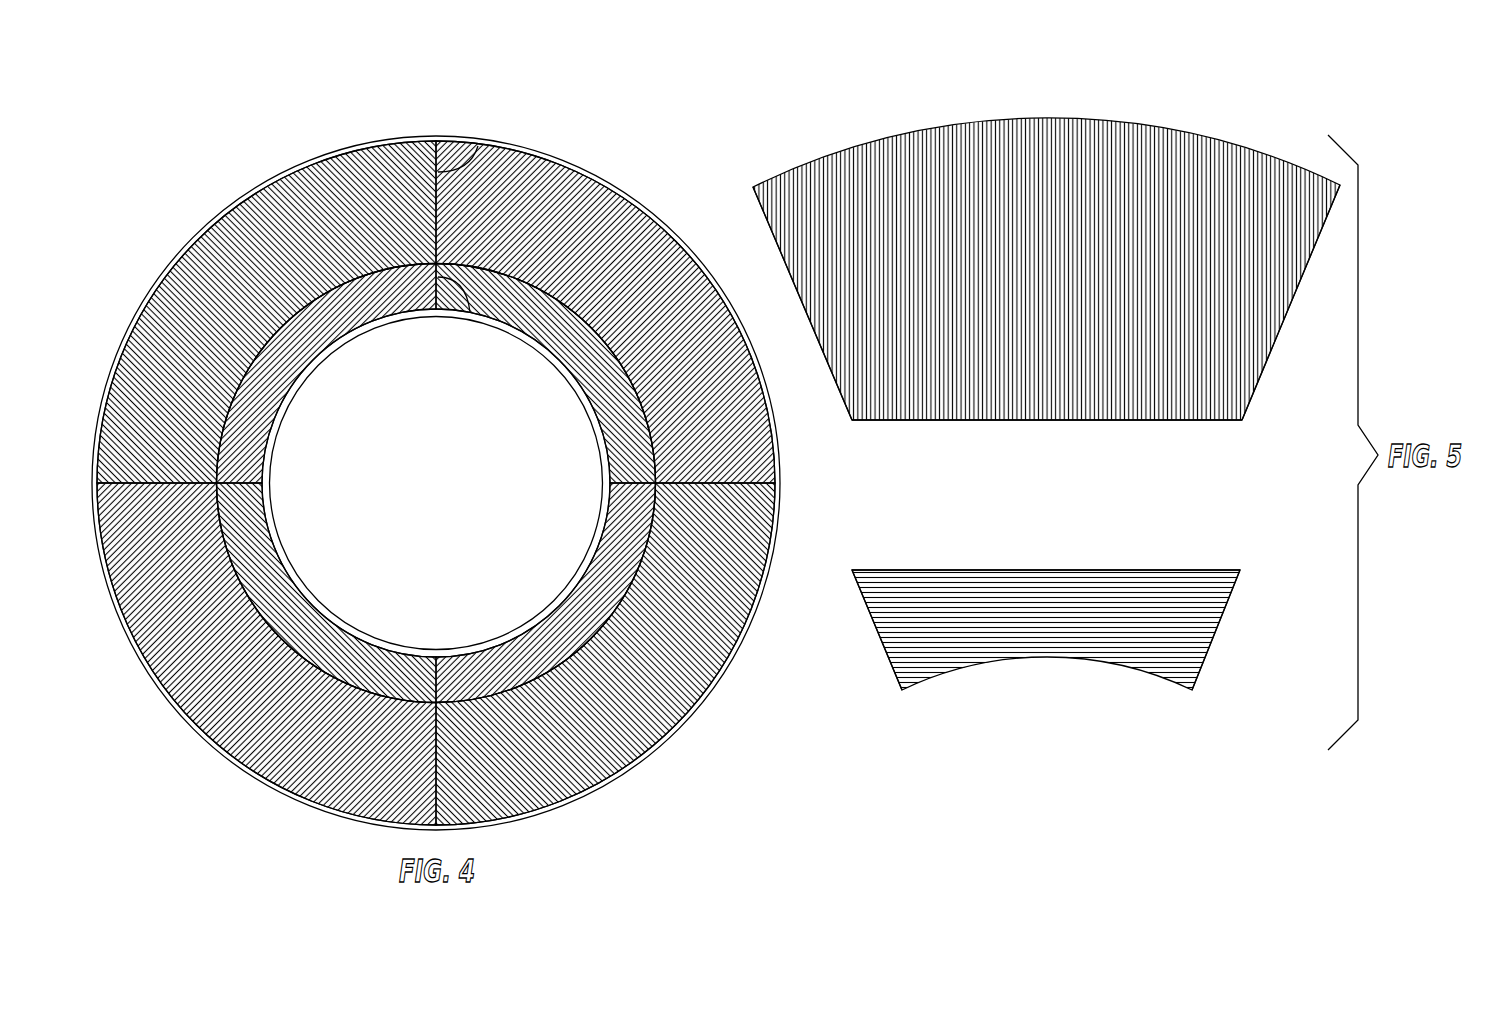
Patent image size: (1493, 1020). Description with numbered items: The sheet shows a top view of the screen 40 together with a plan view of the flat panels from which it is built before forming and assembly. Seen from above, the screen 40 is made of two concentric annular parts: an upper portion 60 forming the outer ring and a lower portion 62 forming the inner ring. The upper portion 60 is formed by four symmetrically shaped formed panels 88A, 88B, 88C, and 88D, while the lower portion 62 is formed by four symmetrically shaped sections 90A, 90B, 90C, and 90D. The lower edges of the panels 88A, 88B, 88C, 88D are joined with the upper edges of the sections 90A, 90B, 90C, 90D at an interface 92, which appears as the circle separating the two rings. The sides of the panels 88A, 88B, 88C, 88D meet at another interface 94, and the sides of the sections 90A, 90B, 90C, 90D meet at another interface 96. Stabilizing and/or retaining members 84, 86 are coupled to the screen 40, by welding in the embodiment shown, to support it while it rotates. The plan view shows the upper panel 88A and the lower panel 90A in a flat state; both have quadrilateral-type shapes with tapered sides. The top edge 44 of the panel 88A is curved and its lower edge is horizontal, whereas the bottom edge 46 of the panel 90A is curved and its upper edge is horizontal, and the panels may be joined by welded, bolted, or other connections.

In FIG. 4, the screen 40 is at (333, 86).
In FIG. 5, the top edge 44 is at (1225, 140).
In FIG. 5, the bottom edge 46 is at (958, 672).
In FIG. 4, the upper portion 60 is at (260, 170).
In FIG. 4, the lower portion 62 is at (324, 355).
In FIG. 4, the stabilizing and/or retaining member 84 is at (690, 707).
In FIG. 4, the stabilizing and/or retaining member 86 is at (375, 635).
In FIG. 4, the formed panel 88A is at (250, 755).
In FIG. 5, the formed panel 88A is at (1078, 140).
In FIG. 4, the formed panel 88B is at (600, 768).
In FIG. 4, the formed panel 88C is at (650, 235).
In FIG. 4, the formed panel 88D is at (388, 160).
In FIG. 4, the section 90A is at (290, 612).
In FIG. 5, the section 90A is at (1118, 664).
In FIG. 4, the section 90B is at (622, 510).
In FIG. 4, the section 90C is at (605, 380).
In FIG. 4, the section 90D is at (388, 285).
In FIG. 4, the interface 92 is at (232, 405).
In FIG. 5, the interface 92 is at (955, 420).
In FIG. 4, the interface 94 is at (470, 312).
In FIG. 5, the interface 94 is at (862, 610).
In FIG. 4, the interface 96 is at (478, 147).
In FIG. 5, the interface 96 is at (782, 258).